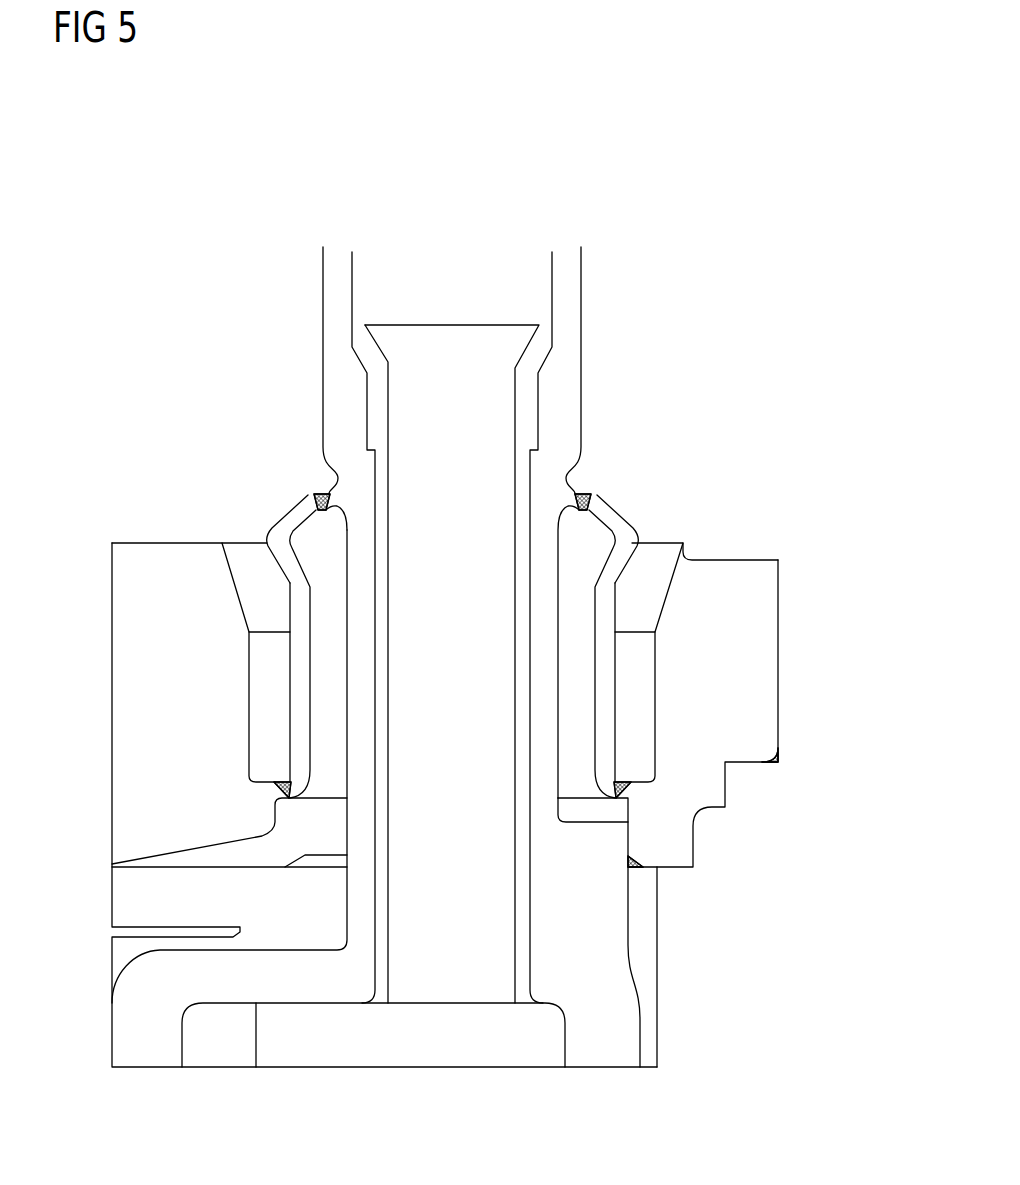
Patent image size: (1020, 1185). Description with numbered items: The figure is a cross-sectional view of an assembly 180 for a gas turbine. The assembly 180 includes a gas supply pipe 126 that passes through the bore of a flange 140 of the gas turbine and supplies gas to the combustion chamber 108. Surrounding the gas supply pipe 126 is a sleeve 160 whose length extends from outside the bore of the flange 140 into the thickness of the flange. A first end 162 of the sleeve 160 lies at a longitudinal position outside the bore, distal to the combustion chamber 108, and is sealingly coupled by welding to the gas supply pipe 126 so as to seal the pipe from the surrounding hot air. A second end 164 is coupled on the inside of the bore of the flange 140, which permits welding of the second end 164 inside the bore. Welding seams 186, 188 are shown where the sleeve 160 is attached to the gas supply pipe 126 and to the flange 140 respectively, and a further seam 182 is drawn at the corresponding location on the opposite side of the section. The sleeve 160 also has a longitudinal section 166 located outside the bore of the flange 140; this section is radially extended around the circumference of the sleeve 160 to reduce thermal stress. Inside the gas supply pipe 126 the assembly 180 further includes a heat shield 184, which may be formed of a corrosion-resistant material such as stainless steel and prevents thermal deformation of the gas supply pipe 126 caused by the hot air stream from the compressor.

The combustion chamber 108 is at (490, 1038).
The gas supply pipe 126 is at (323, 348).
The flange 140 is at (768, 667).
The sleeve 160 is at (665, 664).
The first end 162 is at (597, 500).
The second end 164 is at (625, 787).
The longitudinal section 166 is at (638, 517).
The assembly 180 is at (275, 195).
The lower sealing lip 182 is at (277, 787).
The heat shield 184 is at (485, 605).
The welding seam 186 is at (318, 493).
The welding seam 188 is at (630, 790).